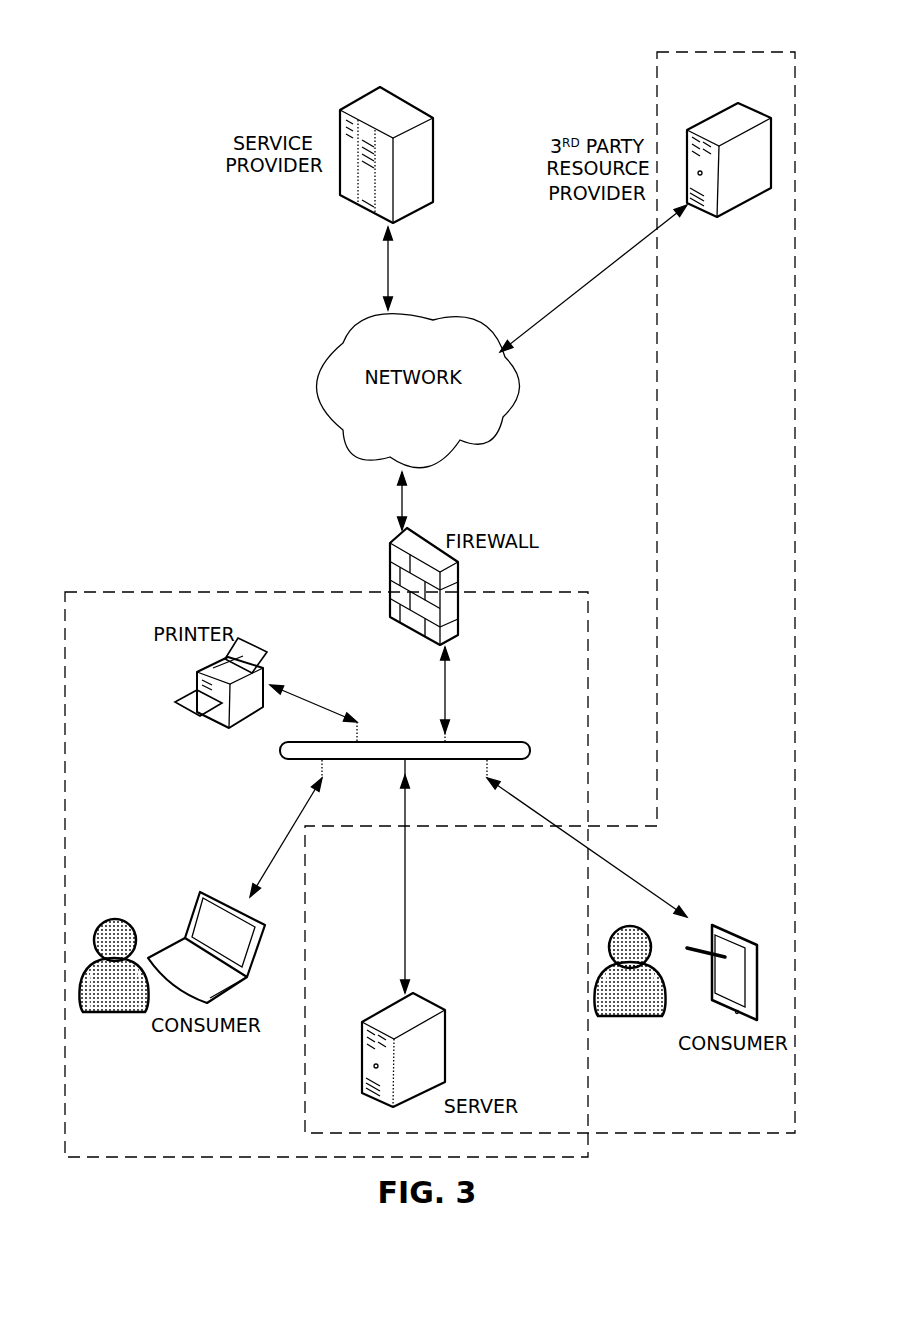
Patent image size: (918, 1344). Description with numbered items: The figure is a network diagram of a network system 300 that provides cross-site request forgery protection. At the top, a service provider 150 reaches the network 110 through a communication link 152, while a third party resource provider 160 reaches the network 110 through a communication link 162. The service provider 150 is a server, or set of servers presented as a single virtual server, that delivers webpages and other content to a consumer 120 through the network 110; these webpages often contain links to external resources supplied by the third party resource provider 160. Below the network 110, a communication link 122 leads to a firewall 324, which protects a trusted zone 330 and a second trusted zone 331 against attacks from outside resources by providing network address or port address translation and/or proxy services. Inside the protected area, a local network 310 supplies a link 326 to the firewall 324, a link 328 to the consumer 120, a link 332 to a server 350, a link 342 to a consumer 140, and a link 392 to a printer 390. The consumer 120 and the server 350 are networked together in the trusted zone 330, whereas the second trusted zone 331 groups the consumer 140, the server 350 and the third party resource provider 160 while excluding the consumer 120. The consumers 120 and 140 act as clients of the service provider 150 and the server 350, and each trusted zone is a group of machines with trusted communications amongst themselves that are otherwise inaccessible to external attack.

The network system 300 is at (250, 102).
The service provider 150 is at (427, 110).
The communication link 152 is at (378, 297).
The third party resource provider 160 is at (718, 220).
The communication link 162 is at (578, 278).
The network 110 is at (399, 410).
The communication link 122 is at (400, 505).
The firewall 324 is at (460, 615).
The trusted zone 330 is at (588, 592).
The second trusted zone 331 is at (657, 678).
The link 326 is at (445, 685).
The network 310 is at (533, 742).
The printer 390 is at (198, 672).
The link 392 is at (308, 700).
The link 328 is at (297, 818).
The consumer 120 is at (190, 908).
The link 332 is at (408, 897).
The link 342 is at (638, 877).
The consumer 140 is at (748, 935).
The server 350 is at (447, 1013).